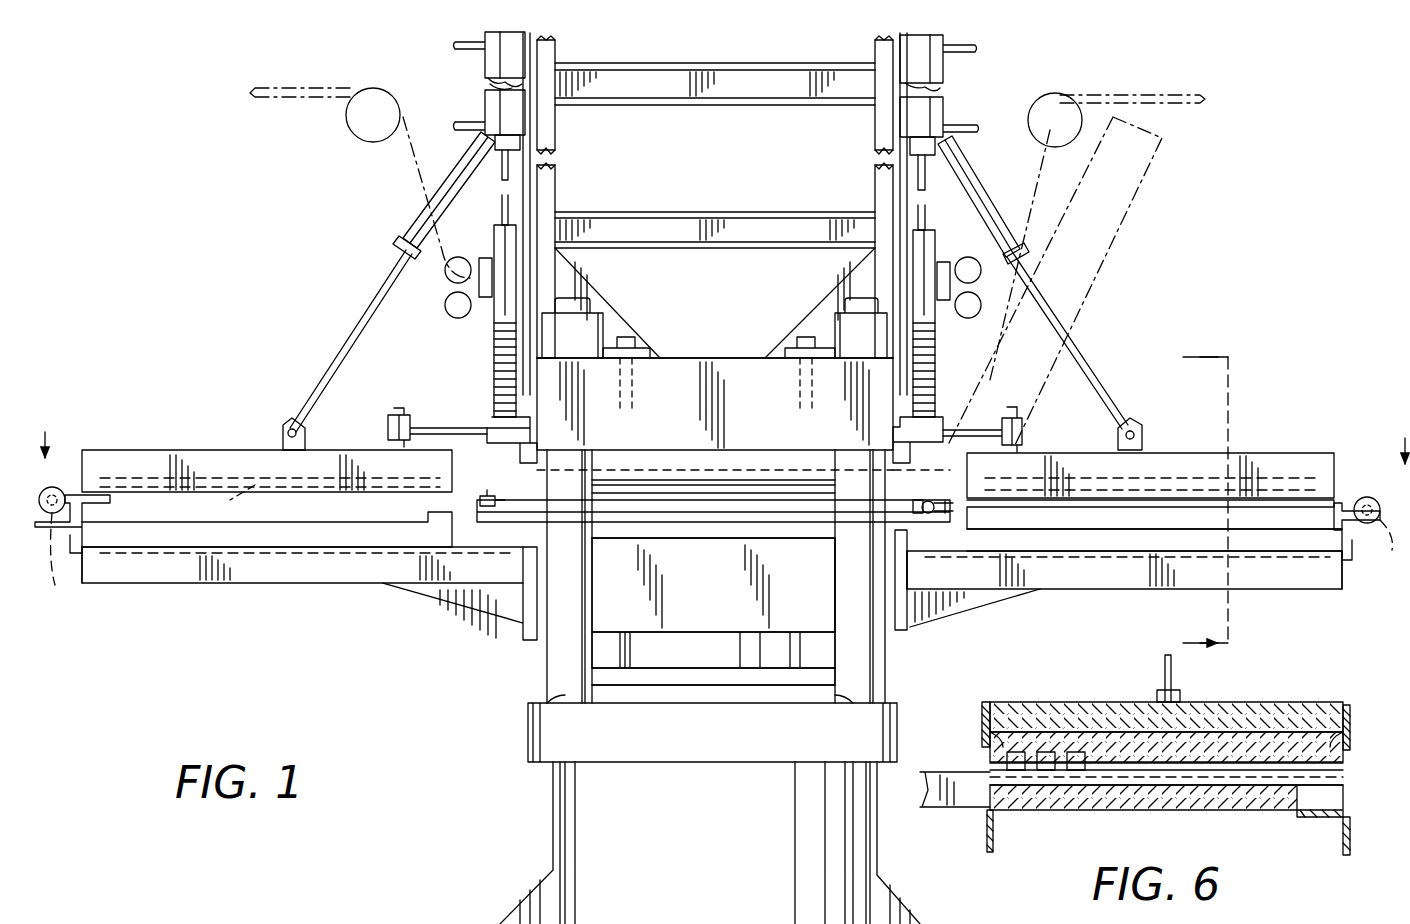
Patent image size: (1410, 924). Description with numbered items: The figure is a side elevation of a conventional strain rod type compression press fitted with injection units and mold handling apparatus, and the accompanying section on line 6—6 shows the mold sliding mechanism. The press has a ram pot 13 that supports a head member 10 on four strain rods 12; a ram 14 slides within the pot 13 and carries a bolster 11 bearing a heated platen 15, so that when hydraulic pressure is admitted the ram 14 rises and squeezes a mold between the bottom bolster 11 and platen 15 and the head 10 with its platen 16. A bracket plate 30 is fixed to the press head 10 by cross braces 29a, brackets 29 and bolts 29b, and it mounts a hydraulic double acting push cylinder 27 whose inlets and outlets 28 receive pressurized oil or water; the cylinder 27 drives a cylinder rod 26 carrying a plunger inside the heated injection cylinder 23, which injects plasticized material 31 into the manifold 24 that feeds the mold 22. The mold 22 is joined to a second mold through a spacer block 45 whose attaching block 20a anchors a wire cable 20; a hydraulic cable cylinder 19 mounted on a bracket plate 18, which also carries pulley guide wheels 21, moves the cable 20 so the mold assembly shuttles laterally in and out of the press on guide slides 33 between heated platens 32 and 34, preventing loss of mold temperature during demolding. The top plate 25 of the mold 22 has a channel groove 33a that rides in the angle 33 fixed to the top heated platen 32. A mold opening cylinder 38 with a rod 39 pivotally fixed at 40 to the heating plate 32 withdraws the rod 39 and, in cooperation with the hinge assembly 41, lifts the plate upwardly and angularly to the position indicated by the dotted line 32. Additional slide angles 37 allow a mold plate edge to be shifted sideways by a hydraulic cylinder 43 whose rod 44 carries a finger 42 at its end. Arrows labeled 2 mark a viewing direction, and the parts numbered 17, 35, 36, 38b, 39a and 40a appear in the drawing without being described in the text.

In FIG. 1, the view direction arrow 2 is at (724, 435).
In FIG. 1, the section line 6 is at (1192, 501).
In FIG. 1, the head member 10 is at (685, 365).
In FIG. 1, the bolster 11 is at (712, 625).
In FIG. 1, the strain rods 12 is at (590, 612).
In FIG. 1, the ram pot 13 is at (862, 848).
In FIG. 1, the ram 14 is at (800, 655).
In FIG. 1, the heated platen 15 is at (780, 540).
In FIG. 1, the platen 16 is at (758, 490).
In FIG. 1, the guide blocks 17 is at (600, 322).
In FIG. 1, the bracket plate 18 is at (696, 520).
In FIG. 1, the hydraulic cable cylinder 19 is at (805, 515).
In FIG. 1, the wire cable 20 is at (520, 510).
In FIG. 1, the attaching block 20a is at (925, 500).
In FIG. 1, the pulley guide wheels 21 is at (485, 502).
In FIG. 1, the mold 22 is at (635, 490).
In FIG. 6, the mold 22 is at (1065, 735).
In FIG. 1, the heated injection cylinder 23 is at (494, 356).
In FIG. 1, the manifold 24 is at (490, 440).
In FIG. 1, the top plate 25 is at (485, 258).
In FIG. 1, the cylinder rod 26 is at (506, 205).
In FIG. 1, the hydraulic double acting push cylinder 27 is at (485, 80).
In FIG. 1, the inlets and outlets 28 is at (472, 44).
In FIG. 1, the brackets 29 is at (588, 300).
In FIG. 1, the cross braces 29a is at (675, 75).
In FIG. 1, the bolts 29b is at (640, 348).
In FIG. 1, the bracket plate 30 is at (552, 185).
In FIG. 1, the plasticized material 31 is at (323, 86).
In FIG. 1, the top heated platen 32 is at (222, 446).
In FIG. 6, the top heated platen 32 is at (1270, 710).
In FIG. 1, the guide slides 33 is at (258, 487).
In FIG. 6, the guide slides 33 is at (984, 720).
In FIG. 6, the channel groove 33a is at (998, 760).
In FIG. 1, the heated platen 34 is at (215, 585).
In FIG. 6, the heated platen 34 is at (1232, 800).
In FIG. 1, the arm leg 35 is at (332, 585).
In FIG. 6, the arm leg 35 is at (995, 835).
In FIG. 1, the gusset bracket 36 is at (470, 600).
In FIG. 1, the slide angles 37 is at (145, 522).
In FIG. 6, the slide angles 37 is at (1160, 812).
In FIG. 1, the mold opening cylinder 38 is at (1010, 236).
In FIG. 1, the left cylinder 38b is at (405, 234).
In FIG. 1, the rod 39 is at (1088, 362).
In FIG. 1, the left piston rod 39a is at (352, 332).
In FIG. 1, the pivot 40 is at (1140, 428).
In FIG. 6, the pivot 40 is at (1175, 690).
In FIG. 1, the left hinge pin 40a is at (282, 416).
In FIG. 1, the hinge assembly 41 is at (393, 412).
In FIG. 1, the finger 42 is at (100, 495).
In FIG. 1, the hydraulic cylinder 43 is at (58, 490).
In FIG. 1, the rod 44 is at (726, 558).
In FIG. 1, the spacer block 45 is at (930, 537).